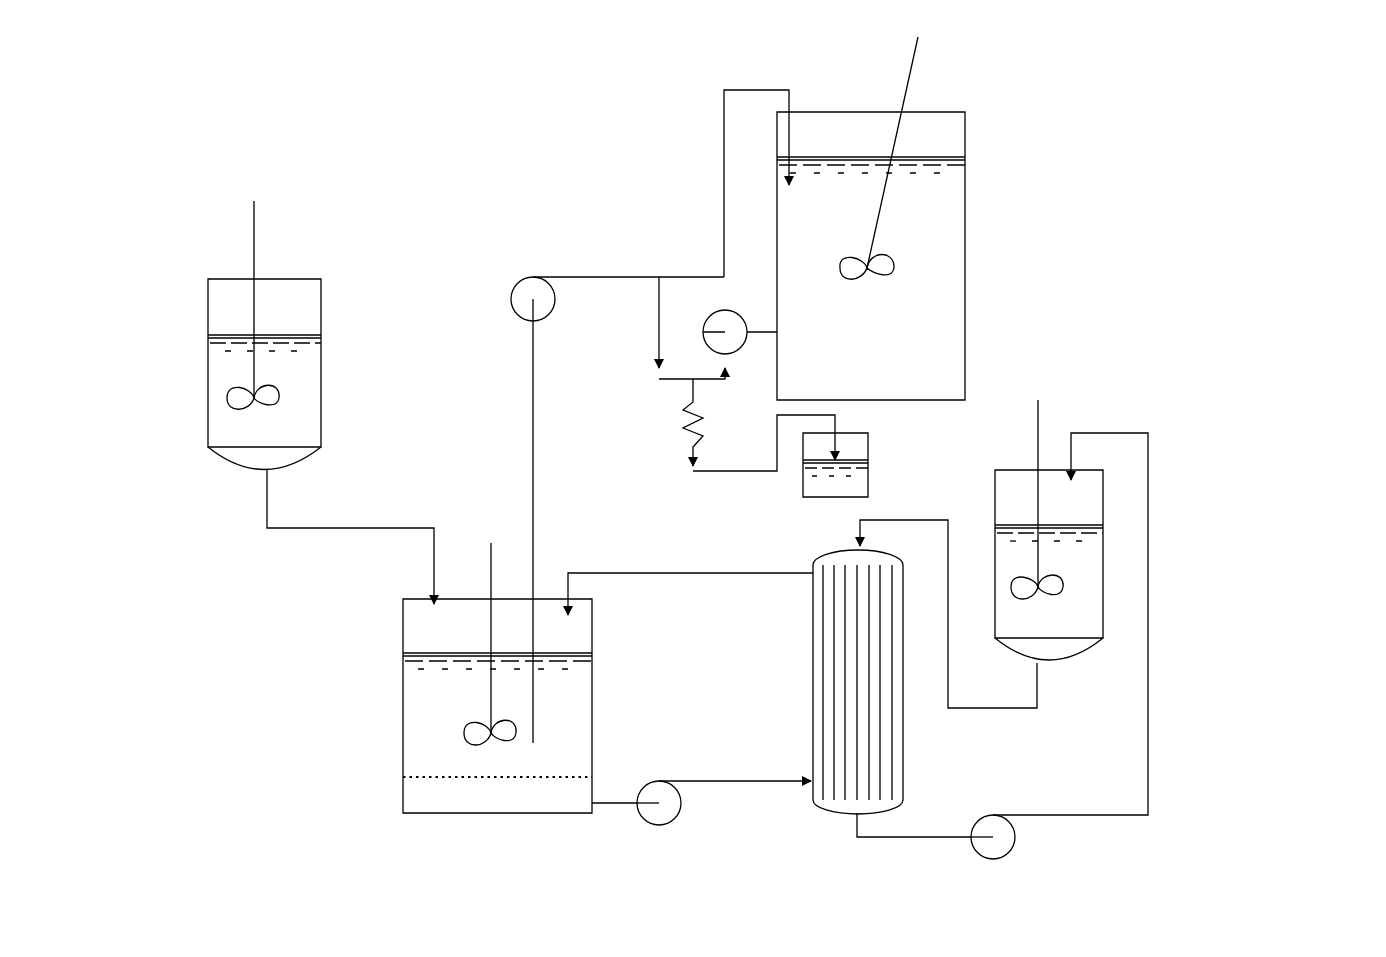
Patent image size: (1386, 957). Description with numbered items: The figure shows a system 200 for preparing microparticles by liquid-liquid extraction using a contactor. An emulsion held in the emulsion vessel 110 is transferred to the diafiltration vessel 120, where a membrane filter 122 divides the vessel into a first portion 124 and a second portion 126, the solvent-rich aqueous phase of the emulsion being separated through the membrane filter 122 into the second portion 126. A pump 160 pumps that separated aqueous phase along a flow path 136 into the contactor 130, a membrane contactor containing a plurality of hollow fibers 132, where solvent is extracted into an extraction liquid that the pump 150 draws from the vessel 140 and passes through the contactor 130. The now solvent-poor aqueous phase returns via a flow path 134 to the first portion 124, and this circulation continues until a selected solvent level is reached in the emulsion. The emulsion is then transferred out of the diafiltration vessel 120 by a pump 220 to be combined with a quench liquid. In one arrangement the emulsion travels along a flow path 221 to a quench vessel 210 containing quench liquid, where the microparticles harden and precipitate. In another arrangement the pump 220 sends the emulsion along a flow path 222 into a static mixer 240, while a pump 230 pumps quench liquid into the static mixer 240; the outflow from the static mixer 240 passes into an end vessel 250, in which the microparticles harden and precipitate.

The system 200 is at (124, 262).
The emulsion vessel 110 is at (208, 366).
The diafiltration vessel 120 is at (403, 612).
The membrane filter 122 is at (424, 780).
The first portion 124 is at (426, 700).
The second portion 126 is at (506, 795).
The contactor 130 is at (904, 746).
The fibers 132 is at (848, 794).
The flow path 134 is at (716, 568).
The flow path 136 is at (746, 783).
The vessel 140 is at (1006, 468).
The pump 150 is at (1004, 846).
The pump 160 is at (674, 824).
The quench vessel 210 is at (966, 172).
The pump 220 is at (550, 314).
The flow path 221 is at (746, 89).
The flow path 222 is at (661, 286).
The pump 230 is at (712, 338).
The static mixer 240 is at (703, 412).
The end vessel 250 is at (869, 440).